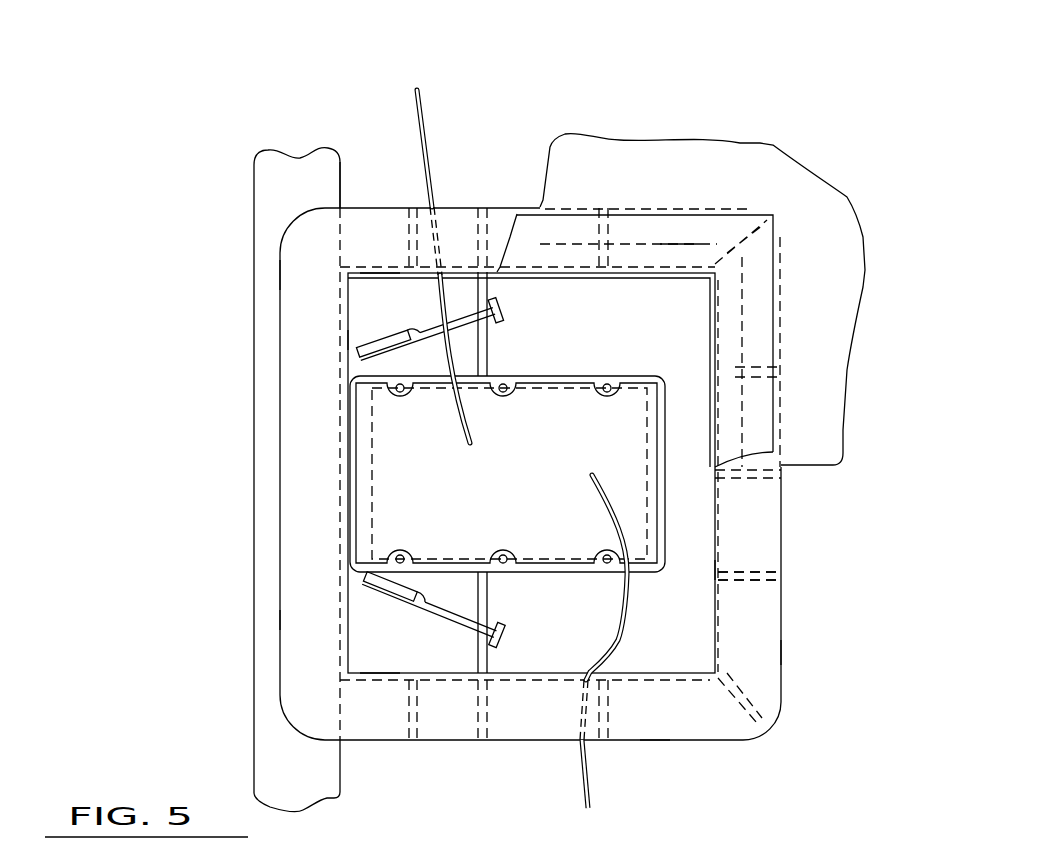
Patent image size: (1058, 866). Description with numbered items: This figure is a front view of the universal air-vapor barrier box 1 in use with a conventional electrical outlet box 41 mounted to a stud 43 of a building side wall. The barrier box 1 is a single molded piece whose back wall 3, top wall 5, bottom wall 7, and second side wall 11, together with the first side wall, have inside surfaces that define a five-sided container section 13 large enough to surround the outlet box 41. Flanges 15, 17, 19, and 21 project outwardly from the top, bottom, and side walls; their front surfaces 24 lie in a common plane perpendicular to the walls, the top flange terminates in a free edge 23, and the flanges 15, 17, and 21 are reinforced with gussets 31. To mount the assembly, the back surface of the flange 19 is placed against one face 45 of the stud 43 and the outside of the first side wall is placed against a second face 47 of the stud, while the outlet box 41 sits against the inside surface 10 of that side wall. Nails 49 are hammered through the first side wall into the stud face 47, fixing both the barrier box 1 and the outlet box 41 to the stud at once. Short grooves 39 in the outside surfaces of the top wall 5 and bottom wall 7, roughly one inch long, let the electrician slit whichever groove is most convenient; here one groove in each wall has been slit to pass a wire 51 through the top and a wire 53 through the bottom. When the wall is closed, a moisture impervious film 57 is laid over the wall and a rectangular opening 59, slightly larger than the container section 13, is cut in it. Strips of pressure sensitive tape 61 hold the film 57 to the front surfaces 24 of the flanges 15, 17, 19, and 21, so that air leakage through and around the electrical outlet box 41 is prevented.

The universal air-vapor barrier box 1 is at (716, 752).
The back wall 3 is at (670, 661).
The top wall 5 is at (377, 277).
The bottom wall 7 is at (370, 670).
The inside surface of the first side wall 10 is at (348, 340).
The second side wall 11 is at (708, 570).
The container section 13 is at (708, 434).
The flange 15 is at (454, 218).
The flange 17 is at (655, 727).
The flange 19 is at (308, 275).
The flange 21 is at (753, 652).
The free edge 23 is at (370, 208).
The front surfaces of the flanges 24 is at (760, 562).
The gussets 31 is at (780, 387).
The short grooves 39 is at (534, 270).
The electrical outlet box 41 is at (532, 363).
The stud 43 is at (243, 735).
The face of the stud 45 is at (278, 192).
The second face of the stud 47 is at (340, 178).
The nails 49 is at (502, 315).
The wire 51 is at (416, 88).
The wire 53 is at (583, 767).
The moisture impervious film 57 is at (825, 447).
The rectangular opening 59 is at (712, 326).
The pressure sensitive tape 61 is at (677, 253).